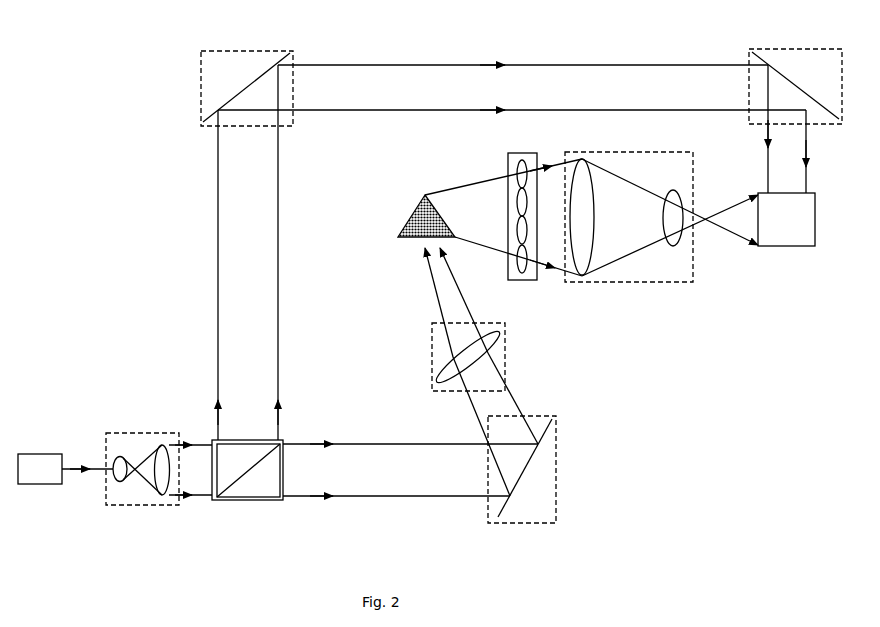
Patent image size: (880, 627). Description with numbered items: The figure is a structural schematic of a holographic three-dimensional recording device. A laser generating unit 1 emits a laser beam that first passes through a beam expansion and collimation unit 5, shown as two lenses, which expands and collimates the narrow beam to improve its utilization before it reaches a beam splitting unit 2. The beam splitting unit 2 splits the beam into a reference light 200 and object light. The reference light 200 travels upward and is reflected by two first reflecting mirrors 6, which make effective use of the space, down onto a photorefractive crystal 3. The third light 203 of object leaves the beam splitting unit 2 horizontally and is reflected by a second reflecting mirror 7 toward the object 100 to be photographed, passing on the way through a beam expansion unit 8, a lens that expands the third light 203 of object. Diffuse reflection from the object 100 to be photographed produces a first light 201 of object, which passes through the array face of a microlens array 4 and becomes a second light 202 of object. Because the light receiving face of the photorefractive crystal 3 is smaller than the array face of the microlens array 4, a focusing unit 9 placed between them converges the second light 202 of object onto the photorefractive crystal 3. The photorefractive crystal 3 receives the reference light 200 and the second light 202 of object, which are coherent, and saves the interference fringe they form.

The laser generating unit 1 is at (38, 465).
The beam splitting unit 2 is at (260, 502).
The photorefractive crystal 3 is at (780, 247).
The microlens array 4 is at (532, 283).
The beam expansion and collimation unit 5 is at (127, 432).
The first reflecting mirror 6 is at (200, 98).
The second reflecting mirror 7 is at (556, 469).
The beam expansion unit 8 is at (432, 360).
The focusing unit 9 is at (647, 221).
The object to be photographed 100 is at (417, 217).
The reference light 200 is at (217, 342).
The first light of object 201 is at (472, 184).
The second light of object 202 is at (560, 160).
The third light of object 203 is at (368, 497).